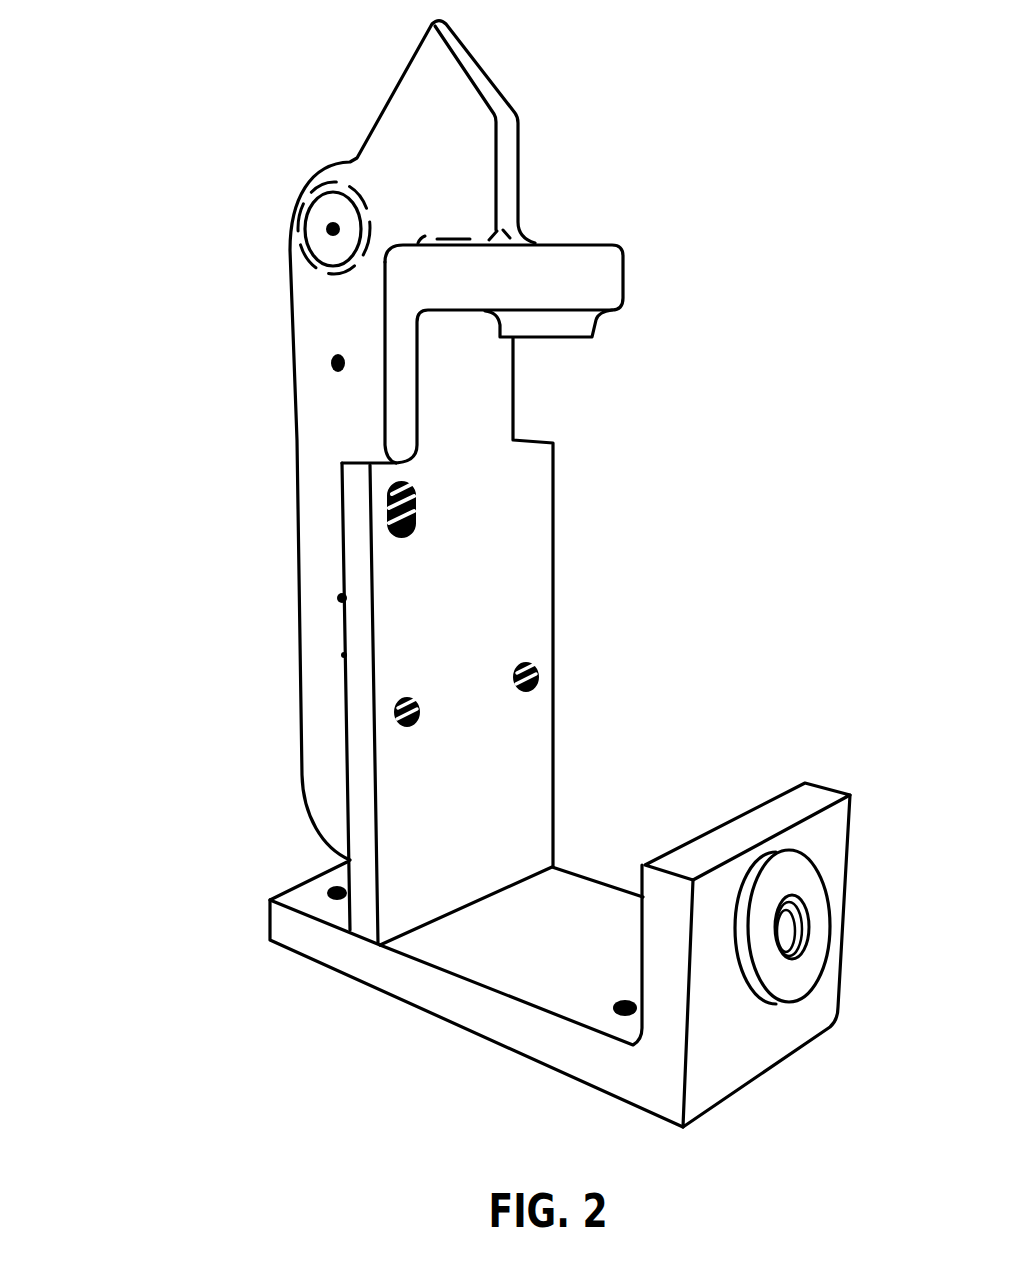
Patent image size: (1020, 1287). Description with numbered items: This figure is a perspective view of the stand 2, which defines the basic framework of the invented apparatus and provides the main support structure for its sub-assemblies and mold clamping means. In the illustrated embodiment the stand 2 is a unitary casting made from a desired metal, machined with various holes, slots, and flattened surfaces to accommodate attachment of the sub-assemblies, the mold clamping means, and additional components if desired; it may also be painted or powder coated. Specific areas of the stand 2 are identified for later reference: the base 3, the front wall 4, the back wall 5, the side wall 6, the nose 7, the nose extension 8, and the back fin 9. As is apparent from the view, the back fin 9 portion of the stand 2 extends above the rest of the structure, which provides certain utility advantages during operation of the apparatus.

The stand 2 is at (215, 306).
The base 3 is at (543, 968).
The front wall 4 is at (745, 1028).
The back wall 5 is at (485, 563).
The side wall 6 is at (363, 763).
The nose 7 is at (588, 276).
The nose extension 8 is at (563, 322).
The back fin 9 is at (325, 432).